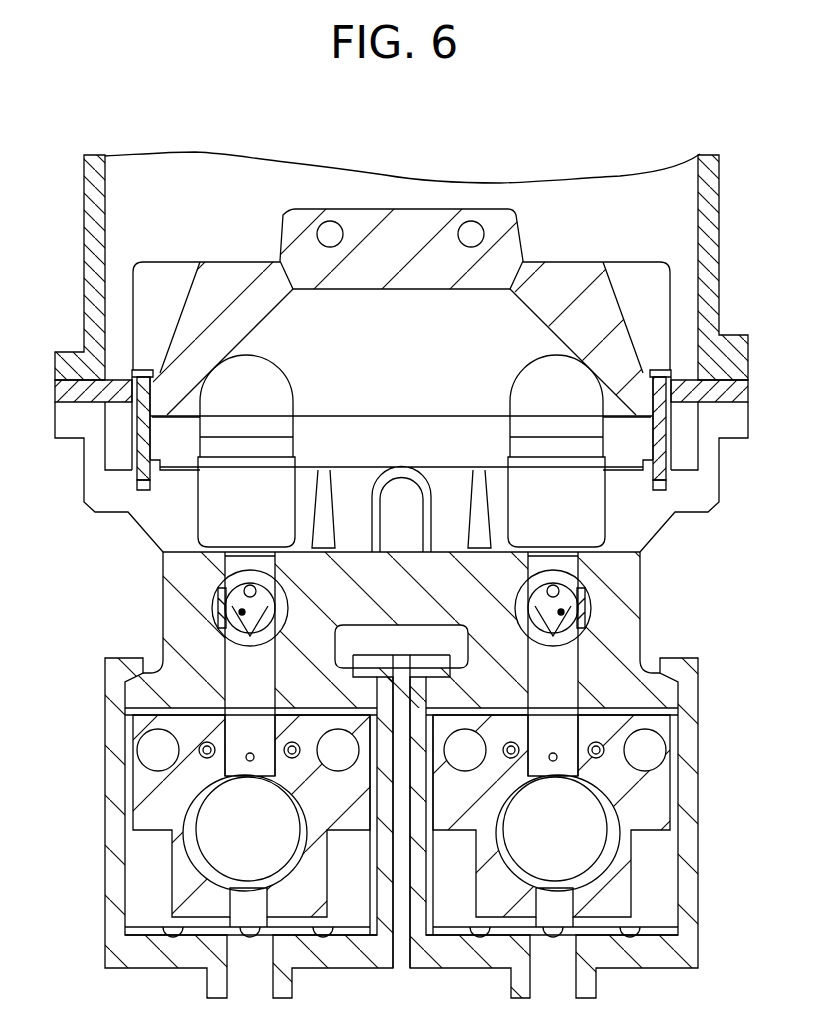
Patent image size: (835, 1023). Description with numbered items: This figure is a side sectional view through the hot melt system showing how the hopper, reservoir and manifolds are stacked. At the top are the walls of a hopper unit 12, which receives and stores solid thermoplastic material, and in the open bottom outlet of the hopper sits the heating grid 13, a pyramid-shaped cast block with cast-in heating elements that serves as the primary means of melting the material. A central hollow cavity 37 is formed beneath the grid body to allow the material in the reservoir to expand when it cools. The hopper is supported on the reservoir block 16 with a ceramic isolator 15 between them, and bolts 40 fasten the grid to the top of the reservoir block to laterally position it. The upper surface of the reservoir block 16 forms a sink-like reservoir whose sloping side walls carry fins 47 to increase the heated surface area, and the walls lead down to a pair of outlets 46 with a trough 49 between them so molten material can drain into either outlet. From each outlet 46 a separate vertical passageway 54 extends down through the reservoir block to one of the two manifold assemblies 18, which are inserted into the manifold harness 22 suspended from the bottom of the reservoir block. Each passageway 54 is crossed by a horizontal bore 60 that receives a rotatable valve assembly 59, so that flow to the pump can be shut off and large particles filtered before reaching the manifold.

The hopper unit 12 is at (97, 188).
The heating grid 13 is at (300, 257).
The ceramic isolator 15 is at (64, 390).
The reservoir block 16 is at (95, 463).
The manifold assembly 18 is at (140, 792).
The manifold harness 22 is at (105, 860).
The central hollow cavity 37 is at (477, 290).
The bolt 40 is at (143, 477).
The outlet 46 is at (230, 563).
The fin 47 is at (192, 500).
The trough 49 is at (458, 578).
The passageway 54 is at (230, 697).
The valve assembly 59 is at (242, 612).
The bore 60 is at (222, 608).